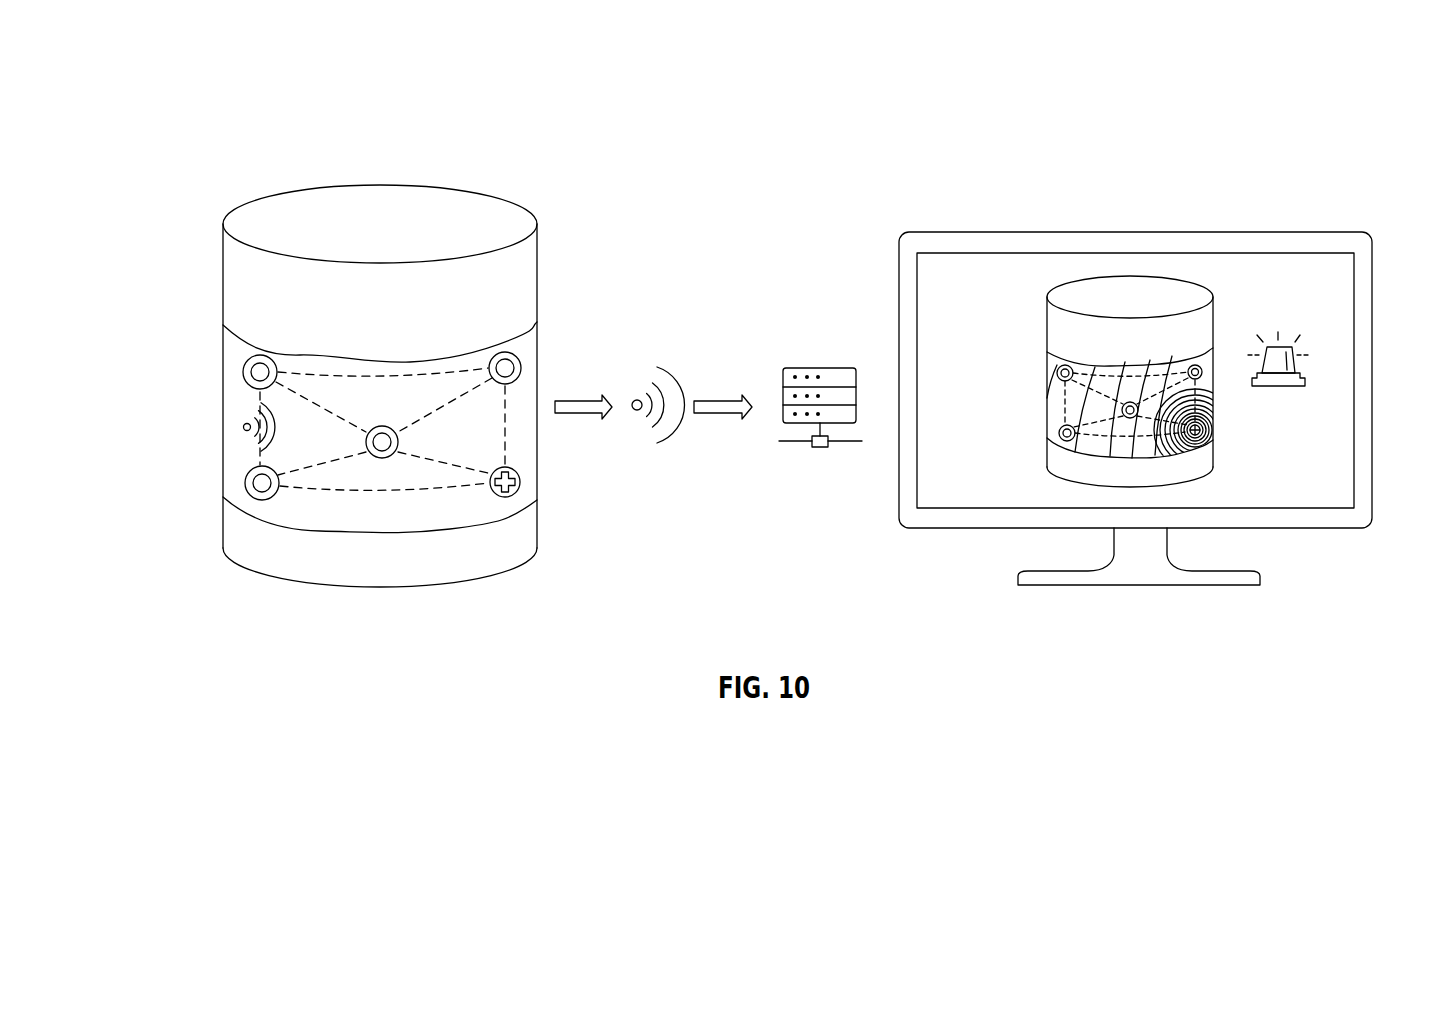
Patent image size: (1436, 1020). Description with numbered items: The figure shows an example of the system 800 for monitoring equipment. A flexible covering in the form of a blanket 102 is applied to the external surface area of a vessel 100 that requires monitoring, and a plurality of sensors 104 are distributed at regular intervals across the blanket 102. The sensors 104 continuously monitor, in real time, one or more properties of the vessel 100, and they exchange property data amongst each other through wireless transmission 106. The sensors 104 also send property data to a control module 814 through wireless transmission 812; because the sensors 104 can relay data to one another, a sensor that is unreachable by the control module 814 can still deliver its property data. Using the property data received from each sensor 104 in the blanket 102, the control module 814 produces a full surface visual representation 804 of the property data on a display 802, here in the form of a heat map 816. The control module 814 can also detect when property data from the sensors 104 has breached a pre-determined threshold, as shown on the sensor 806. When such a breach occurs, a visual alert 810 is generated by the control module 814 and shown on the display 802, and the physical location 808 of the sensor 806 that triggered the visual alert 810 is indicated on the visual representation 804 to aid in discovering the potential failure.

The system 800 is at (220, 78).
The vessel 100 is at (400, 185).
The blanket 102 is at (238, 459).
The sensors 104 is at (243, 367).
The wireless transmission 106 is at (243, 426).
The sensor 806 is at (519, 480).
The wireless transmission 812 is at (665, 372).
The control module 814 is at (818, 367).
The display 802 is at (1296, 232).
The visual representation 804 is at (1047, 325).
The heat map 816 is at (1053, 408).
The physical location 808 is at (1205, 430).
The visual alert 810 is at (1293, 369).